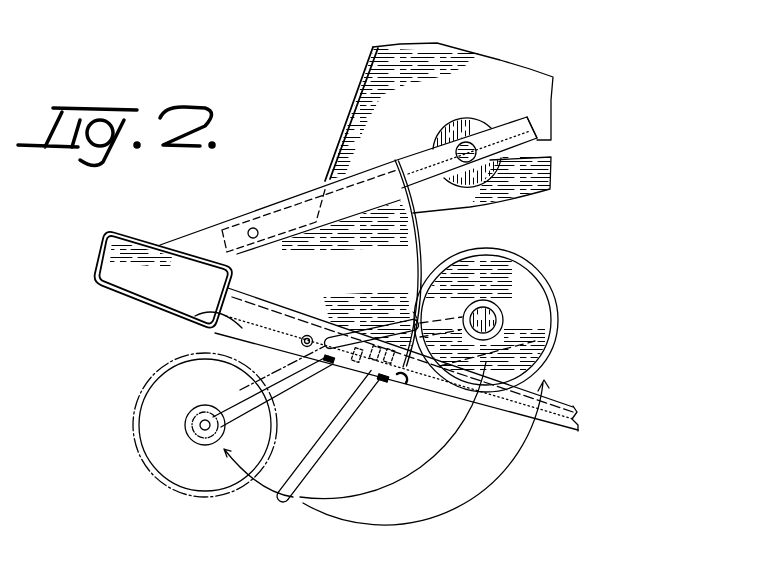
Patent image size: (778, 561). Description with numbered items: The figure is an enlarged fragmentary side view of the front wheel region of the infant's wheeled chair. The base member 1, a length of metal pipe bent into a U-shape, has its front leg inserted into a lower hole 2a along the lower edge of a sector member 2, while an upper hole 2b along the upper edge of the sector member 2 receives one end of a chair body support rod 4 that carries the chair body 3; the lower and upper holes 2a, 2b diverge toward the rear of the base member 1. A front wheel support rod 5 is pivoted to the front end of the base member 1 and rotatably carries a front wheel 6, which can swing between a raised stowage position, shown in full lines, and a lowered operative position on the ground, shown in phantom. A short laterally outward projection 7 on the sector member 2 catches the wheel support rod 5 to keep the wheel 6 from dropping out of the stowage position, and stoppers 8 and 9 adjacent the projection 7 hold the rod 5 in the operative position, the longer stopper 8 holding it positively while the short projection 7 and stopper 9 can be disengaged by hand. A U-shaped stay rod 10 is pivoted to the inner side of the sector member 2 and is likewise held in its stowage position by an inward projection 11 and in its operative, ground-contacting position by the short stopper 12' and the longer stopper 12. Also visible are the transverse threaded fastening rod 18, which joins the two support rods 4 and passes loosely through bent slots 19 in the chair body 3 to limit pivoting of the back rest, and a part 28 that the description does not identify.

The base member 1 is at (563, 403).
The sector member 2 is at (288, 253).
The lower hole 2a is at (195, 316).
The upper hole 2b is at (274, 221).
The chair body 3 is at (500, 73).
The chair body support rod 4 is at (545, 125).
The front wheel support rod 5 is at (402, 312).
The front wheel 6 is at (543, 307).
The projection 7 is at (357, 339).
The stopper 8 is at (307, 335).
The stopper 9 is at (329, 363).
The stay rod 10 is at (281, 500).
The projection 11 is at (403, 385).
The stopper 12 is at (382, 378).
The stopper 12' is at (377, 399).
The transverse fastening rod 18 is at (478, 139).
The bent slot 19 is at (543, 150).
The disc 28 is at (462, 127).